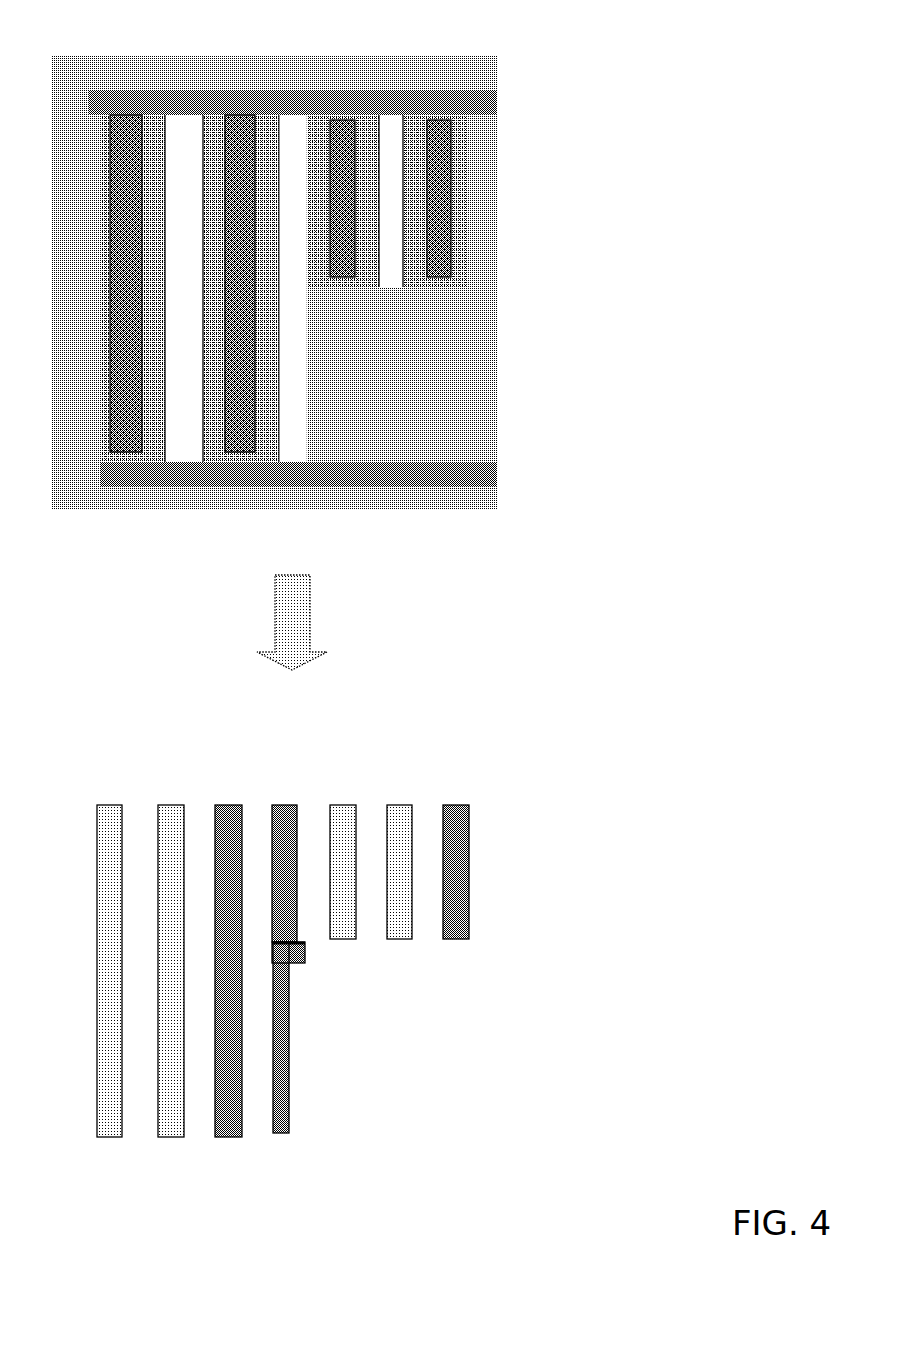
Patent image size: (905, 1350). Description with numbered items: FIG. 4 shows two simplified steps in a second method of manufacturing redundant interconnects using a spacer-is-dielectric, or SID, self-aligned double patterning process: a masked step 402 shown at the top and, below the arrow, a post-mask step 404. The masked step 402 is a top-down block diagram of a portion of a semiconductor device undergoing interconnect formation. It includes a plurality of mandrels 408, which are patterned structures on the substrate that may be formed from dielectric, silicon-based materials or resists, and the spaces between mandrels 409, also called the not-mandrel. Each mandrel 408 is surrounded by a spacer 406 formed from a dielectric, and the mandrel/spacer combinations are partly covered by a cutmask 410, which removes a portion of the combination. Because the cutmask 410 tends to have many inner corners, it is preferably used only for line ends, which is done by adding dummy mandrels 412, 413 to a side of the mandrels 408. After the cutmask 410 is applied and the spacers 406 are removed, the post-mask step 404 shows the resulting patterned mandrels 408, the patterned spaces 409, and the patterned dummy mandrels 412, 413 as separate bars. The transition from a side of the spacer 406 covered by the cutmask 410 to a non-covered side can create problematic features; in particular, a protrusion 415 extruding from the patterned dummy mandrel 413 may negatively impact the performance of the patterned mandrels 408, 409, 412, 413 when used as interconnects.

The masked step 402 is at (614, 42).
The post-mask step 404 is at (716, 852).
The spacer 406 is at (207, 155).
The mandrel 408 is at (127, 365).
The space between mandrels 409 is at (192, 415).
The cutmask 410 is at (462, 440).
The dummy mandrel 412 is at (453, 222).
The dummy mandrel 413 is at (293, 380).
The protrusion 415 is at (305, 950).